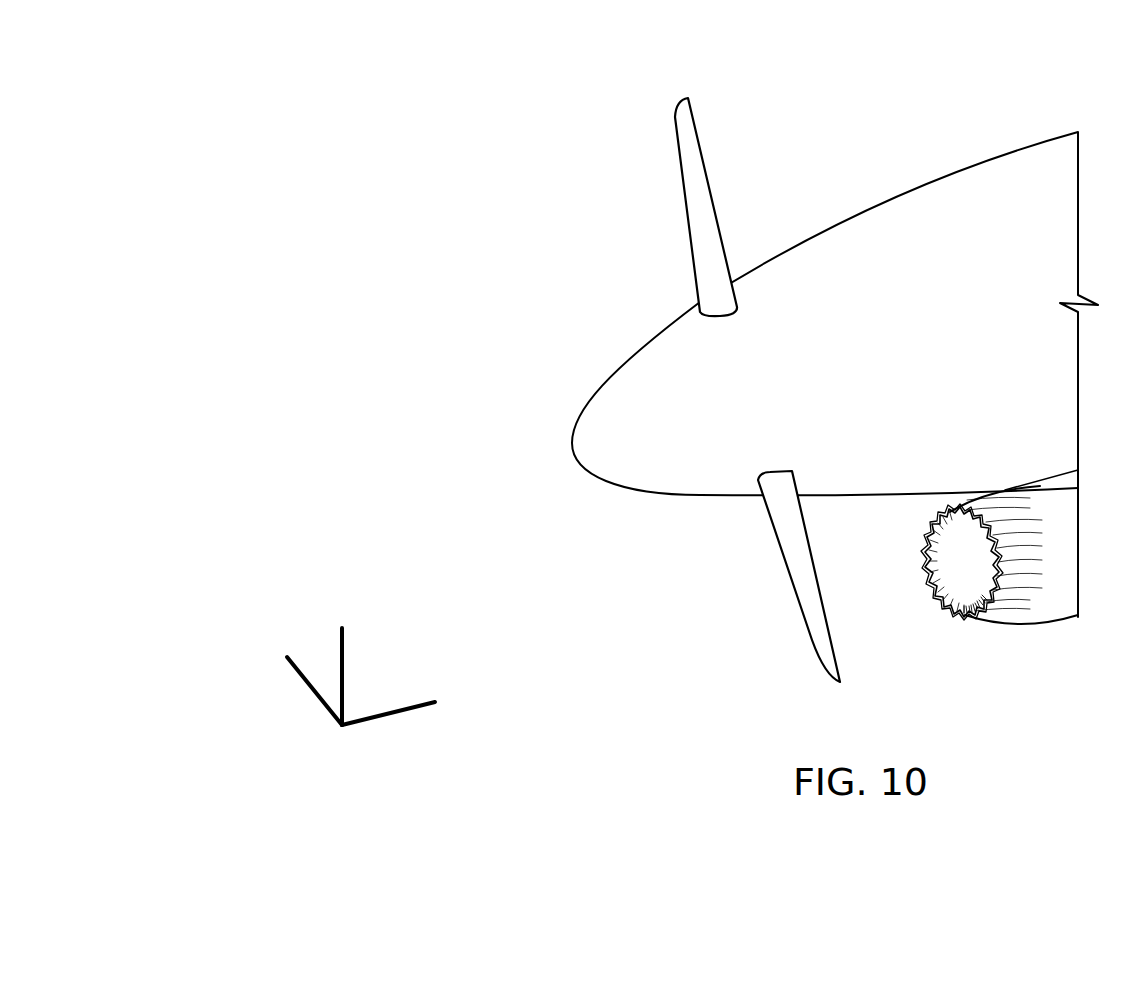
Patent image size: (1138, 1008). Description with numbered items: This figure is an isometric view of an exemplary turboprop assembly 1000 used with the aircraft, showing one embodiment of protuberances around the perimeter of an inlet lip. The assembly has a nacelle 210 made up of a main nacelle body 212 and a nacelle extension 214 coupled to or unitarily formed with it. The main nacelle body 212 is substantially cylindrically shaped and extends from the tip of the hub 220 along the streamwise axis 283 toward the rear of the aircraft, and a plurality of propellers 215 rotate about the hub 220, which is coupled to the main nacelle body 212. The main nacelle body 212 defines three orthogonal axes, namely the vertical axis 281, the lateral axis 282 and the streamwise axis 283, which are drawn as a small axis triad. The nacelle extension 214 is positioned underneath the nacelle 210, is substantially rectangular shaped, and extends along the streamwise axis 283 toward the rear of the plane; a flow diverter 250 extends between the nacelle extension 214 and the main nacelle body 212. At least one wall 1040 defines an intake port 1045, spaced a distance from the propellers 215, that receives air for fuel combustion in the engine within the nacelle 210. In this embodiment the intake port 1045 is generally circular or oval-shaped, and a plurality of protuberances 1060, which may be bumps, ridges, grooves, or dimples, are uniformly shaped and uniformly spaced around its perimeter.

The turboprop assembly 1000 is at (664, 66).
The main nacelle body 212 is at (814, 174).
The nacelle 210 is at (660, 286).
The propellers 215 is at (800, 623).
The hub 220 is at (571, 442).
The nacelle extension 214 is at (1042, 652).
The flow diverter 250 is at (946, 511).
The wall 1040 is at (930, 565).
The intake port 1045 is at (916, 598).
The protuberances 1060 is at (963, 614).
The vertical axis 281 is at (344, 648).
The lateral axis 282 is at (300, 681).
The streamwise axis 283 is at (413, 702).